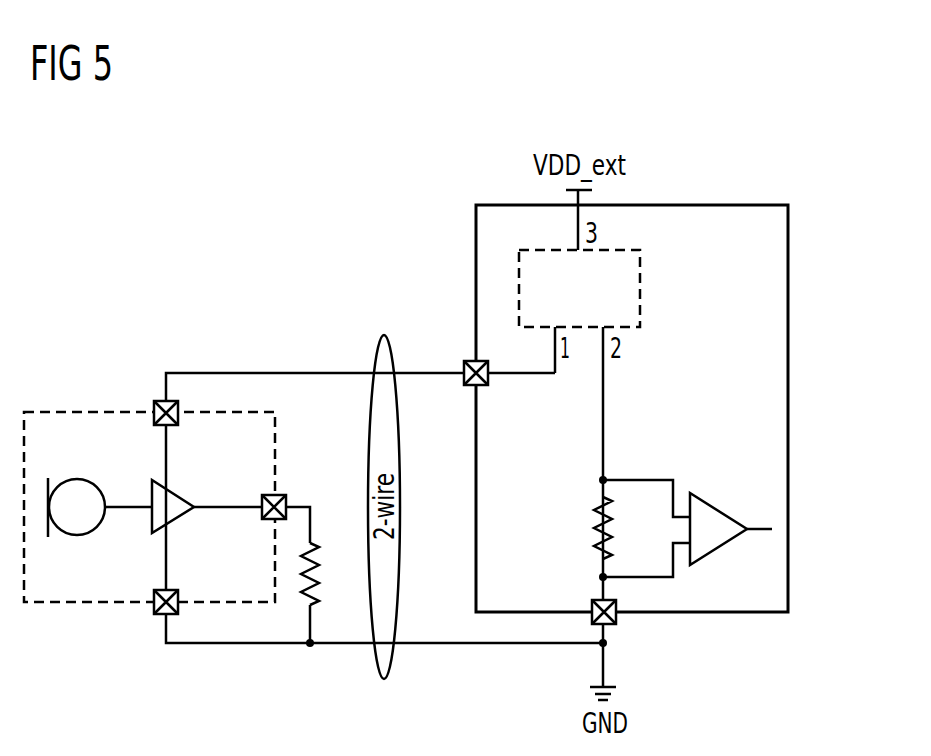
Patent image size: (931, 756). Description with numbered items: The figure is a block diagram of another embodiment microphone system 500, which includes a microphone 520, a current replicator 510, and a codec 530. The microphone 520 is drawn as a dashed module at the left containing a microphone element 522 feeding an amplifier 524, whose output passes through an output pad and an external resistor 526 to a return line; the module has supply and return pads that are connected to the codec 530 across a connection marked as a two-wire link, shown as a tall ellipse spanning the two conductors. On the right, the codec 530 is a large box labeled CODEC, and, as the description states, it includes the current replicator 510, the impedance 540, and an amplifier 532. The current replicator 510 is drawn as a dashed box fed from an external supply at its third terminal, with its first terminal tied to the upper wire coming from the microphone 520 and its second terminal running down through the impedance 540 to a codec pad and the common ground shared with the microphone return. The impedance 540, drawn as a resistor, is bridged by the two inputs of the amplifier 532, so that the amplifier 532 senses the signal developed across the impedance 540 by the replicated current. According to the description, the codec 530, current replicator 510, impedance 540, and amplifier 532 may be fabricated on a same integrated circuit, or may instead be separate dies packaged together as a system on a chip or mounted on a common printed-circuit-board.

The microphone system 500 is at (722, 97).
The current replicator 510 is at (641, 302).
The microphone 520 is at (95, 412).
The microphone 522 is at (92, 482).
The amplifier 524 is at (150, 521).
The output resistor Ro 526 is at (313, 543).
The codec 530 is at (698, 205).
The amplifier 532 is at (720, 511).
The impedance 540 is at (600, 497).